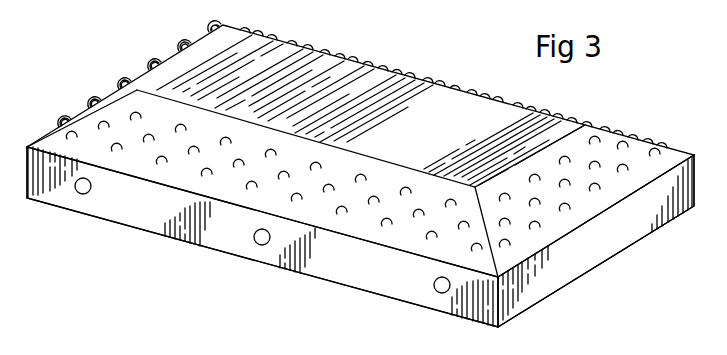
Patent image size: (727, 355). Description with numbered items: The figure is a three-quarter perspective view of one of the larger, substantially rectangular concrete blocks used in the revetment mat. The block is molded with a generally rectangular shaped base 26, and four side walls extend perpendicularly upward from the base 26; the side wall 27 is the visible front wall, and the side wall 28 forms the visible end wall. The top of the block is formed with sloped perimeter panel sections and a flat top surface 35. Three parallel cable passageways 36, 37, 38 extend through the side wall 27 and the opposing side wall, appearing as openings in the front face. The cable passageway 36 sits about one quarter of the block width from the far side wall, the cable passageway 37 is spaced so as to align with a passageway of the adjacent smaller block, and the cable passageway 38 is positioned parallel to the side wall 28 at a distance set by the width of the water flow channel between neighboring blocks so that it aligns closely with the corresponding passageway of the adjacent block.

The base 26 is at (590, 248).
The side wall 27 is at (540, 290).
The side wall 28 is at (354, 268).
The flat top surface 35 is at (409, 98).
The cable passageway 36 is at (441, 294).
The cable passageway 37 is at (262, 245).
The cable passageway 38 is at (85, 195).